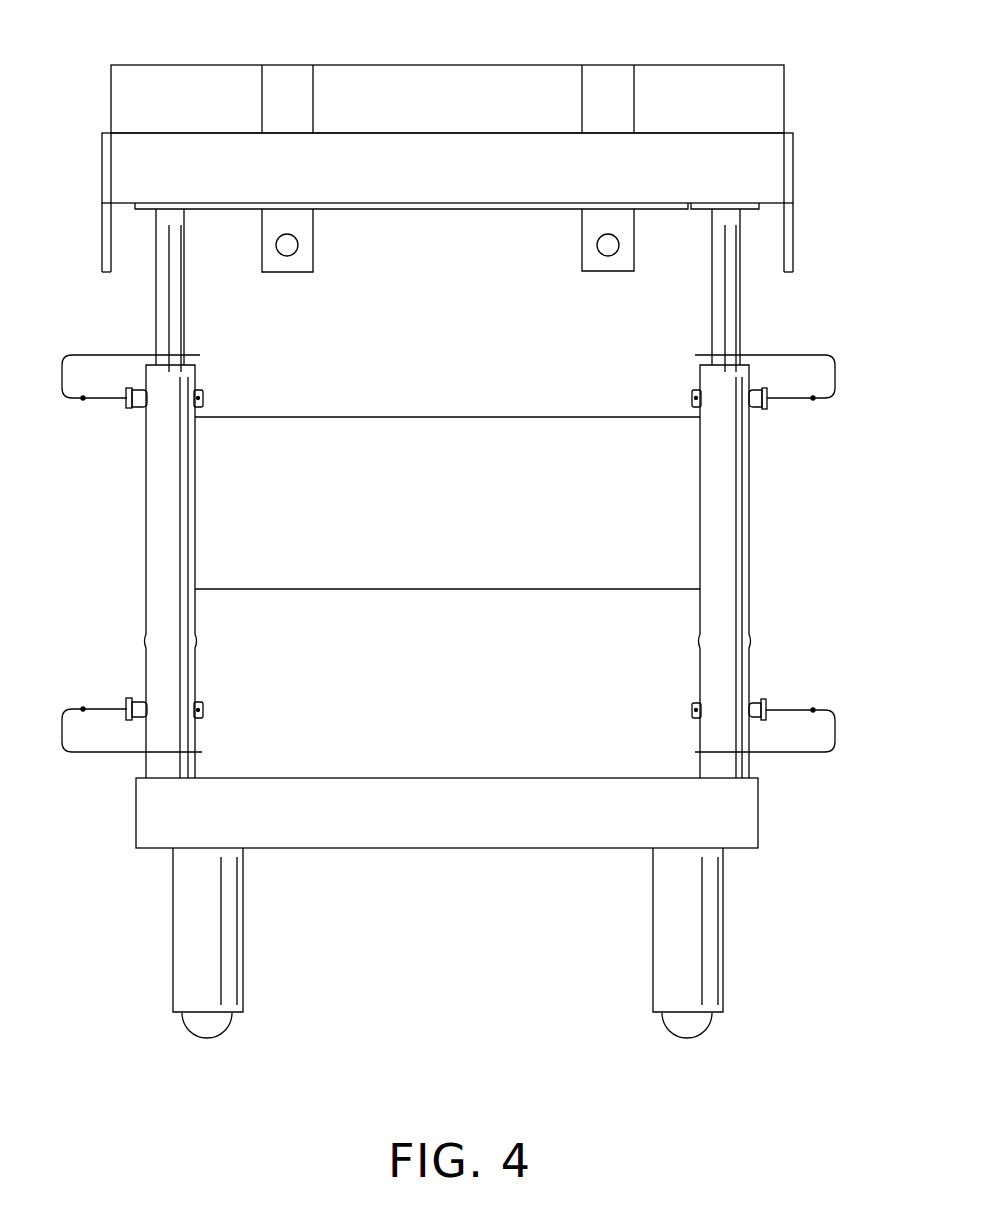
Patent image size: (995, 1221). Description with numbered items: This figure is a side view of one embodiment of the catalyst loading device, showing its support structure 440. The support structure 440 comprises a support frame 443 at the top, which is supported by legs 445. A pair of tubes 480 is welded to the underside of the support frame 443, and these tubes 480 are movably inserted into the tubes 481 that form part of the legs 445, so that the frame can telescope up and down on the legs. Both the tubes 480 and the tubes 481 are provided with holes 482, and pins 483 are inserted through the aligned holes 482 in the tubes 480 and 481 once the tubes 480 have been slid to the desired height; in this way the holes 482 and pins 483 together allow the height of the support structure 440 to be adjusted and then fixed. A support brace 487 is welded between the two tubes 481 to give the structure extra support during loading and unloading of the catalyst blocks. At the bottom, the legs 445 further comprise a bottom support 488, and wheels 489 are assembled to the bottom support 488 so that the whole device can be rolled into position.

The support structure 440 is at (362, 210).
The support frame 443 is at (505, 212).
The legs 445 is at (185, 300).
The tubes 480 is at (156, 290).
The tubes 481 is at (147, 540).
The holes 482 is at (146, 645).
The pins 483 is at (125, 713).
The support brace 487 is at (410, 590).
The bottom support 488 is at (340, 848).
The wheels 489 is at (238, 1020).